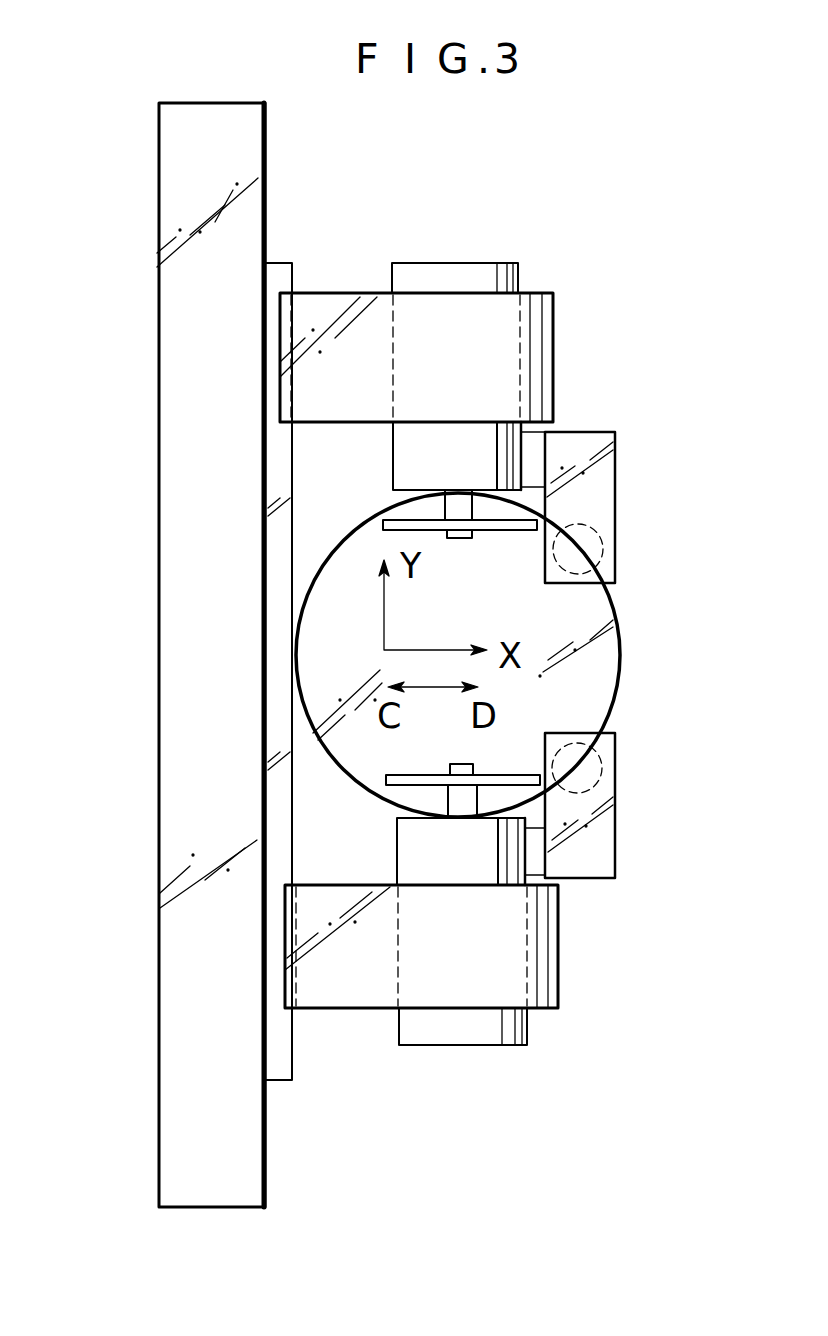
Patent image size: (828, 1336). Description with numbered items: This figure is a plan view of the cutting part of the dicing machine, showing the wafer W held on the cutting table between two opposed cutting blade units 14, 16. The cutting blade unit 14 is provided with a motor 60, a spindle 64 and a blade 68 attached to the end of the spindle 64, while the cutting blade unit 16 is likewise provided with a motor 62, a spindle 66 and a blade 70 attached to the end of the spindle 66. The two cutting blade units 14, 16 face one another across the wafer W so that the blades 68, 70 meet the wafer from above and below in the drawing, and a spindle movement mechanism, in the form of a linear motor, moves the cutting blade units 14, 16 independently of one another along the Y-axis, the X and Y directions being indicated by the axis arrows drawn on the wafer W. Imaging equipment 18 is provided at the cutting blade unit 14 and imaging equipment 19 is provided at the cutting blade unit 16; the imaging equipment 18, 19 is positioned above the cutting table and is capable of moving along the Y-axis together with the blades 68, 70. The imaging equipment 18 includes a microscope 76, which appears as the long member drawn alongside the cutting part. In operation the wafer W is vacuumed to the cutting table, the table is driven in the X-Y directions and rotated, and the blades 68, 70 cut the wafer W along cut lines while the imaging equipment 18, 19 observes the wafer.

The cutting blade unit 14 is at (443, 397).
The cutting blade unit 16 is at (431, 974).
The imaging equipment 18 is at (612, 545).
The imaging equipment 19 is at (612, 768).
The motor 60 is at (405, 443).
The motor 62 is at (470, 1033).
The spindle 64 is at (460, 540).
The spindle 66 is at (455, 768).
The blade 68 is at (398, 520).
The blade 70 is at (400, 790).
The microscope 76 is at (176, 665).
The wafer W is at (617, 657).